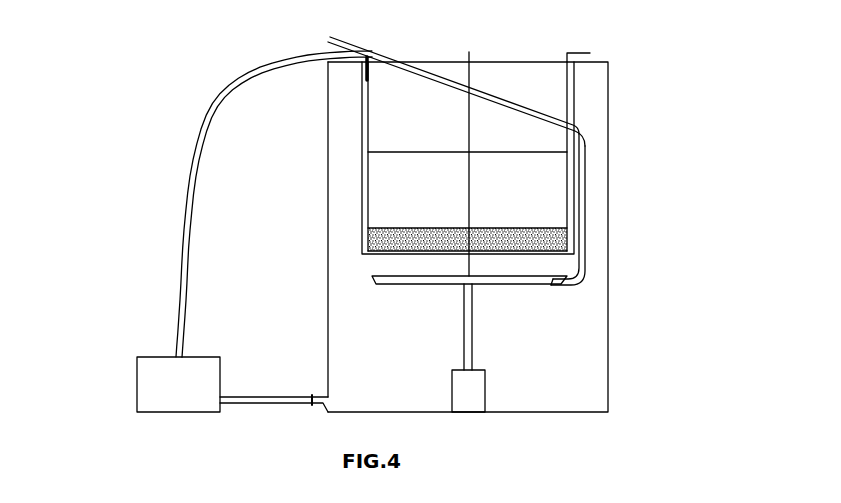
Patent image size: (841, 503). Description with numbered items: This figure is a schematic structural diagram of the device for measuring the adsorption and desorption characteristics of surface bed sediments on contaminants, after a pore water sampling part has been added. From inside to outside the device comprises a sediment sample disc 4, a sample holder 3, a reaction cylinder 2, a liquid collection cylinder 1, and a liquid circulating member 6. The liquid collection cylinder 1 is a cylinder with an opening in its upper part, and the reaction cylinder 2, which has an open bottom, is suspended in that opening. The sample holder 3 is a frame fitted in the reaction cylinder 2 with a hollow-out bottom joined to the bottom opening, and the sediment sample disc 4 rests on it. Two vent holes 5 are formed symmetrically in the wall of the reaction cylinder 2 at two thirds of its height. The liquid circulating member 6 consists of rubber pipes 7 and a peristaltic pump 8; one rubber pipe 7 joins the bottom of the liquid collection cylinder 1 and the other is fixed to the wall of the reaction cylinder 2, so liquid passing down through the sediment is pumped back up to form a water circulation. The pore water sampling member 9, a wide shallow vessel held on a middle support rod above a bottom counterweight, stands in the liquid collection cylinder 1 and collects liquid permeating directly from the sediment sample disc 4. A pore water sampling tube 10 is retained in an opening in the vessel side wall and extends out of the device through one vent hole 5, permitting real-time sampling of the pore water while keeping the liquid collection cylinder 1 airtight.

The liquid collection cylinder 1 is at (573, 362).
The reaction cylinder 2 is at (545, 128).
The sample holder 3 is at (365, 186).
The sediment sample disc 4 is at (557, 237).
The vent hole 5 is at (364, 122).
The liquid circulating member 6 is at (213, 231).
The rubber pipe 7 is at (183, 230).
The peristaltic pump 8 is at (212, 372).
The pore water sampling member 9 is at (473, 348).
The pore water sampling tube 10 is at (587, 167).